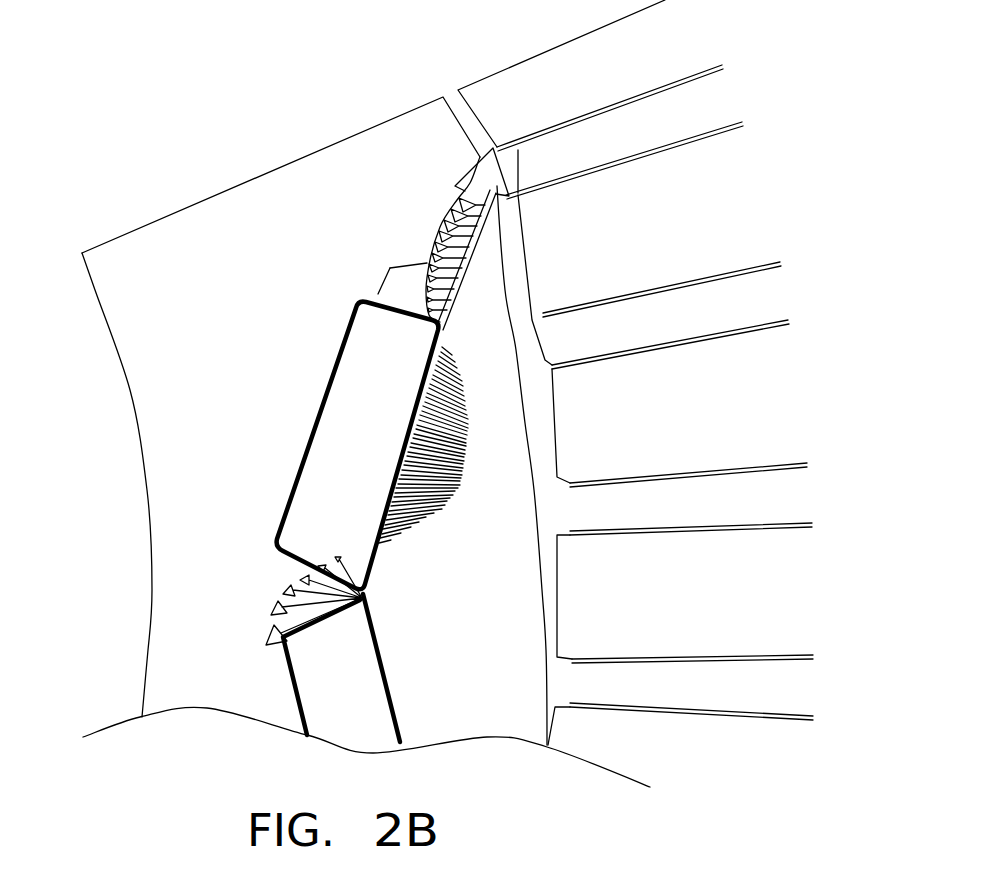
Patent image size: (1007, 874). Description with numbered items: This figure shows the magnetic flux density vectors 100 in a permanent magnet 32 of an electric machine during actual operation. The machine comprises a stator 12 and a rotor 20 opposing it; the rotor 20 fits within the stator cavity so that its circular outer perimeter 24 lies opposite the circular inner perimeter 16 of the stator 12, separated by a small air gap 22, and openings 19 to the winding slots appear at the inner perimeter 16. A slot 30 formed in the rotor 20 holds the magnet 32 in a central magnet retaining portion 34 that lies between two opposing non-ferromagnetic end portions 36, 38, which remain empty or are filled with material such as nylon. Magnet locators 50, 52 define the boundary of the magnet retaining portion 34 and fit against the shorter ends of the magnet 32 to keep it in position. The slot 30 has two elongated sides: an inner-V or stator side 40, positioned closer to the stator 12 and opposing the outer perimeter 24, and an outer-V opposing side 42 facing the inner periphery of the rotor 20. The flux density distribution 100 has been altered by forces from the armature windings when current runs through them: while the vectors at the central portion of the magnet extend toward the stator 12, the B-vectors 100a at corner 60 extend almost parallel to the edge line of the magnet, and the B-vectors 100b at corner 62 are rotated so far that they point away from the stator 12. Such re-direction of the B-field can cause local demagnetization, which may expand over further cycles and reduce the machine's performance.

The stator 12 is at (532, 320).
The circular inner perimeter 16 is at (560, 611).
The openings 19 is at (670, 288).
The rotor 20 is at (215, 232).
The air gap 22 is at (543, 733).
The circular outer perimeter 24 is at (545, 575).
The slot 30 is at (402, 283).
The permanent magnet 32 is at (340, 427).
The central magnet retaining portion 34 is at (334, 368).
The end portion 36 is at (426, 263).
The end portion 38 is at (297, 558).
The inner-V side 40 is at (443, 340).
The outer-V side 42 is at (303, 463).
The magnet locator 50 is at (378, 292).
The magnet locator 52 is at (285, 572).
The corner 60 is at (443, 333).
The corner 62 is at (378, 500).
The magnetic flux density vectors 100 is at (445, 492).
The B-vectors 100a is at (509, 198).
The B-vectors 100b is at (335, 615).